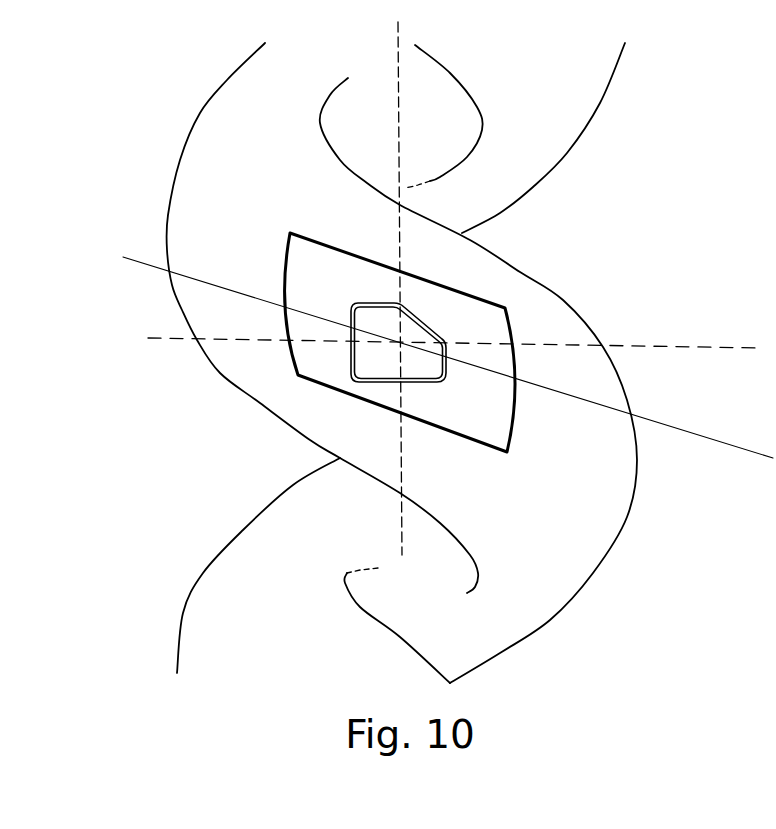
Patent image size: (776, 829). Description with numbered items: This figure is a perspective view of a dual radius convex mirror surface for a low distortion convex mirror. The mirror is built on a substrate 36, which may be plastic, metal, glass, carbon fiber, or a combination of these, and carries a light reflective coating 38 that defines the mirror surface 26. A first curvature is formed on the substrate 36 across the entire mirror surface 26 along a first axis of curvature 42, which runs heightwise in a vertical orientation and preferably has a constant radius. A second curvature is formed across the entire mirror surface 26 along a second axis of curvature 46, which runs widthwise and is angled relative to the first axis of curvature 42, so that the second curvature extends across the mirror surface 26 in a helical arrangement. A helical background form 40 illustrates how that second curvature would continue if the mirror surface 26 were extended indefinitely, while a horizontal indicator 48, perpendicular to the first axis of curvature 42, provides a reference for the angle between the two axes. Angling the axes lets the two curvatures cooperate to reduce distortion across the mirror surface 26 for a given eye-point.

The mirror surface 26 is at (407, 331).
The substrate 36 is at (352, 368).
The light reflective coating 38 is at (385, 371).
The helical background form 40 is at (233, 165).
The first axis of curvature 42 is at (390, 177).
The second axis of curvature 46 is at (197, 280).
The horizontal indicator 48 is at (168, 342).